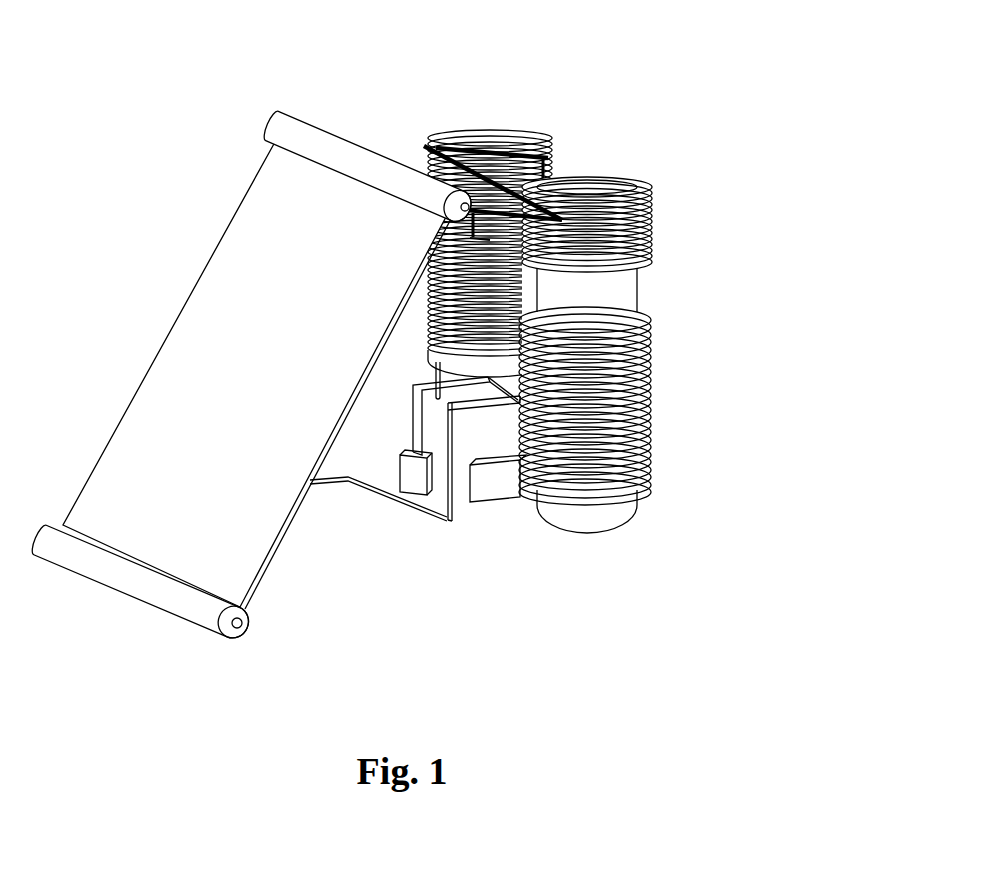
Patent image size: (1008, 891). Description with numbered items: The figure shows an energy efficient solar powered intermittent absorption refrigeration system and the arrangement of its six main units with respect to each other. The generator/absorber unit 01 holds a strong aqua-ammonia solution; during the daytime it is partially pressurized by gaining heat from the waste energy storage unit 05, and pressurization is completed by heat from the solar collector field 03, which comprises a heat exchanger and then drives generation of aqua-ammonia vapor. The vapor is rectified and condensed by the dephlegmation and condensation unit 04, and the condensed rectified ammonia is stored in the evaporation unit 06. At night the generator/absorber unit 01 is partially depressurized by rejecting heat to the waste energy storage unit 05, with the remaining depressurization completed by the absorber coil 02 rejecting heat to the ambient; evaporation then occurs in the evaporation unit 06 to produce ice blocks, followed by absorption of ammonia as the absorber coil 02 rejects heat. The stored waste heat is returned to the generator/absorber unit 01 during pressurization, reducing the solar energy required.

The generator/absorber unit 01 is at (640, 287).
The absorber coil 02 is at (648, 415).
The solar collector field 03 is at (232, 346).
The dephlegmation and condensation unit 04 is at (530, 137).
The waste energy storage unit 05 is at (473, 153).
The evaporation unit 06 is at (483, 450).